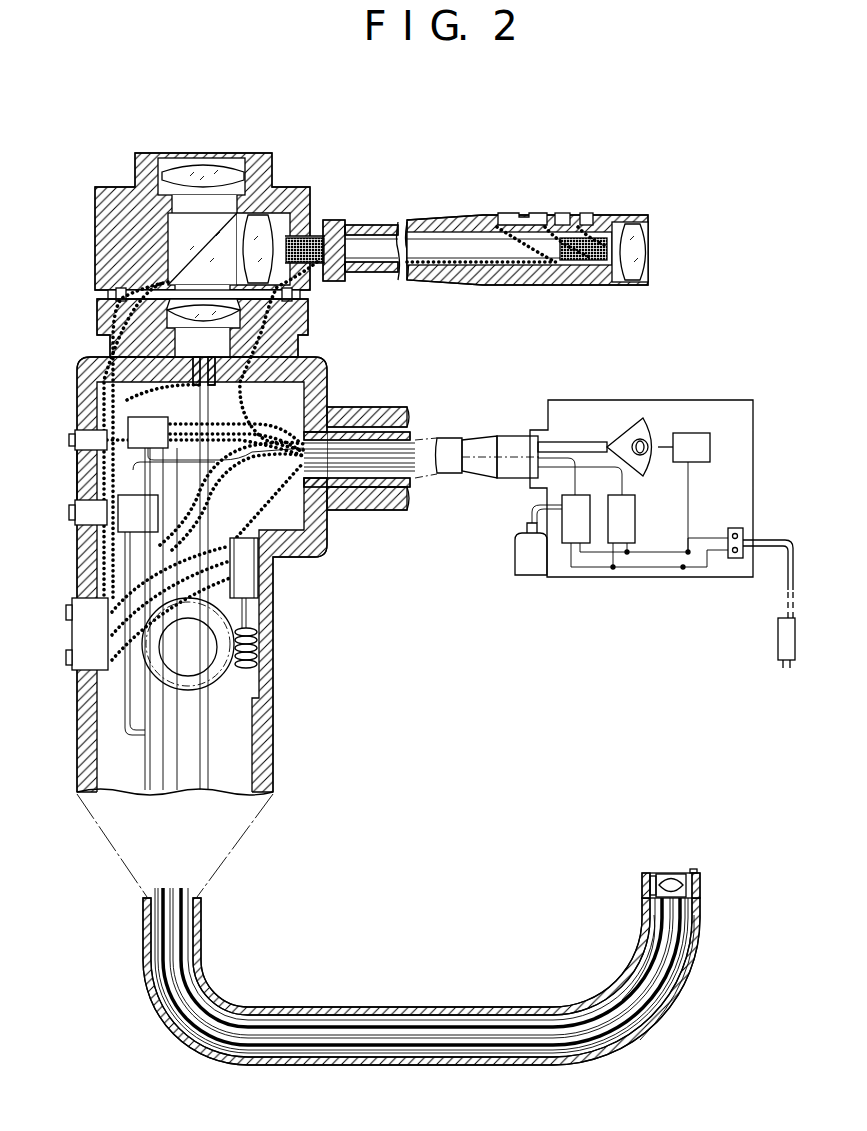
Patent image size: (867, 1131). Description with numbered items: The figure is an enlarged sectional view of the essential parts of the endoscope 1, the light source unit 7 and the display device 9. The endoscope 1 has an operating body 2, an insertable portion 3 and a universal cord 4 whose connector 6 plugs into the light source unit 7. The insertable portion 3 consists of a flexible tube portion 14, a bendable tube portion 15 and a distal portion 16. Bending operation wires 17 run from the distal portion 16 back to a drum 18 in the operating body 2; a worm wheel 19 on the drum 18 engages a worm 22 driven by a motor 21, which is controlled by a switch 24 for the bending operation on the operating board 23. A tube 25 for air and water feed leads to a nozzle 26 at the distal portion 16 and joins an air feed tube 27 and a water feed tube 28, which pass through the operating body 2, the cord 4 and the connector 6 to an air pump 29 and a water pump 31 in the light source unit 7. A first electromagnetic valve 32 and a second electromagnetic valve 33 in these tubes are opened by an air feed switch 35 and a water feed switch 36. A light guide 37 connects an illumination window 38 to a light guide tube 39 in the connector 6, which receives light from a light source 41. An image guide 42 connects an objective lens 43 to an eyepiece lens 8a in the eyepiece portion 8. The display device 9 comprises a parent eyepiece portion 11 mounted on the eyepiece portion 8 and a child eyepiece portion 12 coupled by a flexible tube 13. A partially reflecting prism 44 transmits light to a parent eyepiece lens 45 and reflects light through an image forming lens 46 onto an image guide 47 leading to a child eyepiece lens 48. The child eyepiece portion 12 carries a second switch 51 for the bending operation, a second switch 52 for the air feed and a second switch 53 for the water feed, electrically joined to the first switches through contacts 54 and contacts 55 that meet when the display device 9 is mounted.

The endoscope 1 is at (622, 133).
The operating body 2 is at (340, 527).
The insertable portion 3 is at (404, 1000).
The universal cord 4 is at (448, 446).
The connector 6 is at (516, 440).
The light source unit 7 is at (722, 408).
The eyepiece portion 8 is at (280, 347).
The eyepiece lens 8a is at (203, 320).
The display device 9 is at (320, 181).
The parent eyepiece portion 11 is at (122, 200).
The child eyepiece portion 12 is at (565, 285).
The flexible tube 13 is at (407, 228).
The flexible tube portion 14 is at (465, 1007).
The bendable tube portion 15 is at (691, 992).
The distal portion 16 is at (642, 886).
The bending operation wires 17 is at (202, 752).
The drum 18 is at (202, 666).
The worm wheel 19 is at (248, 616).
The motor 21 is at (245, 577).
The worm 22 is at (259, 650).
The operating board 23 is at (78, 492).
The switch for the bending operation 24 is at (85, 640).
The tube for air and water feed 25 is at (333, 1048).
The nozzle 26 is at (696, 869).
The air feed tube 27 is at (142, 735).
The water feed tube 28 is at (147, 698).
The air pump 29 is at (630, 512).
The water pump 31 is at (586, 504).
The first electromagnetic valve 32 is at (130, 520).
The second electromagnetic valve 33 is at (152, 424).
The air feed switch 35 is at (85, 514).
The water feed switch 36 is at (72, 442).
The light guide 37 is at (178, 516).
The illumination window 38 is at (655, 877).
The light guide tube 39 is at (570, 442).
The light source 41 is at (632, 435).
The image guide 42 is at (205, 400).
The objective lens 43 is at (673, 873).
The partially reflecting prism 44 is at (180, 237).
The parent eyepiece lens 45 is at (222, 168).
The image forming lens 46 is at (262, 240).
The image guide for display 47 is at (464, 248).
The child eyepiece lens 48 is at (650, 252).
The second switch for the bending operation 51 is at (528, 212).
The second switch for the air feed 52 is at (562, 212).
The second switch for the water feed 53 is at (590, 214).
The contacts 54 is at (118, 300).
The contacts 55 is at (116, 295).